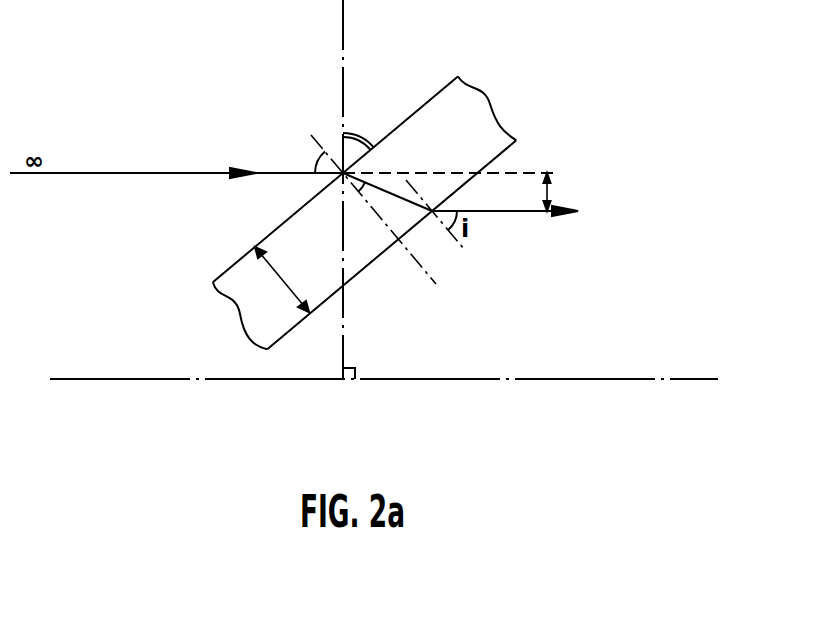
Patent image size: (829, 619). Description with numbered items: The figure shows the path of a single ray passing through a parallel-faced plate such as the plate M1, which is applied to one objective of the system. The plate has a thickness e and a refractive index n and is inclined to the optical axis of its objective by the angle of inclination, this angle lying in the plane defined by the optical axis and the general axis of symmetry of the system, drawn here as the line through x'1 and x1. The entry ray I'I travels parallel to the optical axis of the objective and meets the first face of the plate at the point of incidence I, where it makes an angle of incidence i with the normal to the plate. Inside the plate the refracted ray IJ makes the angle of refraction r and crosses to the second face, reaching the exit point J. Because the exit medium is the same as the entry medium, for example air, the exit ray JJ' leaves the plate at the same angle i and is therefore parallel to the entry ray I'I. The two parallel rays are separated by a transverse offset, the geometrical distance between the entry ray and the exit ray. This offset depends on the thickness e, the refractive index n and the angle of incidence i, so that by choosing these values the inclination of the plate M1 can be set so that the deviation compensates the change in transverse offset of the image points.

The parallel-faced plate M1 is at (455, 110).
The entry ray point I' is at (176, 159).
The point of incidence I is at (365, 192).
The exit point J is at (439, 231).
The exit ray point J' is at (506, 226).
The angle of incidence i is at (312, 155).
The angle of refraction r is at (365, 197).
The plate thickness e is at (282, 279).
The refractive index n is at (267, 324).
The axis of symmetry x1 is at (391, 371).
The axis of symmetry x'1 is at (125, 371).